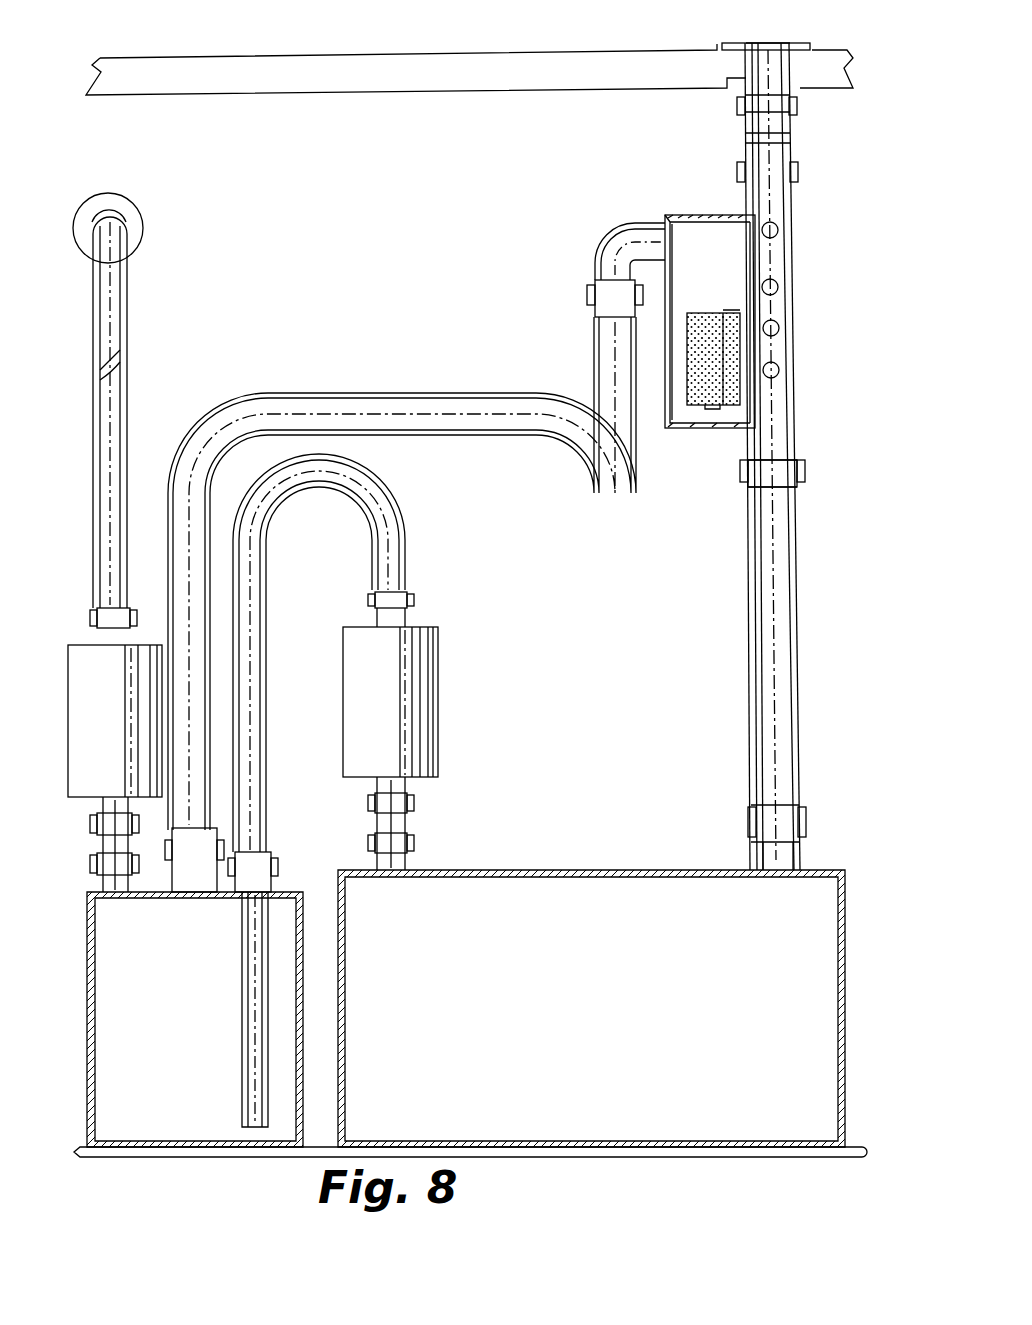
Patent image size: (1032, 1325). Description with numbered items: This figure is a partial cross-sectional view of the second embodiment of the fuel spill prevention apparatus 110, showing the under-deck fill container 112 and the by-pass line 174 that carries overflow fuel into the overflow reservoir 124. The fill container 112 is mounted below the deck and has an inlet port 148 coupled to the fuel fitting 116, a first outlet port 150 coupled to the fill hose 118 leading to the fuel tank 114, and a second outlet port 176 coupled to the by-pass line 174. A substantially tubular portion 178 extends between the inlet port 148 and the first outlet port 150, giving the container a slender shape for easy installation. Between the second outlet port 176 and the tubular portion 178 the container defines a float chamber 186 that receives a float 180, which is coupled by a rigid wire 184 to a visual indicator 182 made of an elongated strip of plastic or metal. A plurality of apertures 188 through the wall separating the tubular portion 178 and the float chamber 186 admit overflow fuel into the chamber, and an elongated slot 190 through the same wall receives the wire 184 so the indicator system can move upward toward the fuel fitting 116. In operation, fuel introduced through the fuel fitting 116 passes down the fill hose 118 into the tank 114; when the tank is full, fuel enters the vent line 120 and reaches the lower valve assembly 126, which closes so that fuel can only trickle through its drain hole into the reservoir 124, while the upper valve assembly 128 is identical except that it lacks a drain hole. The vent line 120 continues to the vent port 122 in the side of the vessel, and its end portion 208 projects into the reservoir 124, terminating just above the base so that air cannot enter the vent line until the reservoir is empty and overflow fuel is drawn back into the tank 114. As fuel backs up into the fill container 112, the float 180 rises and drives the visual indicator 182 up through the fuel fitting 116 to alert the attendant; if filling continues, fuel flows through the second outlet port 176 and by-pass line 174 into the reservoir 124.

The apparatus 110 is at (528, 184).
The fill container 112 is at (716, 198).
The fuel tank 114 is at (570, 868).
The fuel fitting 116 is at (745, 45).
The fill hose 118 is at (748, 610).
The vent line 120 is at (125, 297).
The vent port 122 is at (108, 195).
The overflow reservoir 124 is at (287, 888).
The lower valve assembly 126 is at (440, 677).
The upper valve assembly 128 is at (157, 683).
The inlet port 148 is at (765, 113).
The first outlet port 150 is at (772, 462).
The by-pass line 174 is at (280, 392).
The second outlet port 176 is at (593, 318).
The tubular portion 178 is at (786, 418).
The float 180 is at (702, 385).
The visual indicator 182 is at (757, 68).
The rigid wire 184 is at (768, 140).
The float chamber 186 is at (705, 262).
The apertures 188 is at (778, 285).
The elongated slot 190 is at (748, 308).
The end portion 208 is at (243, 1062).